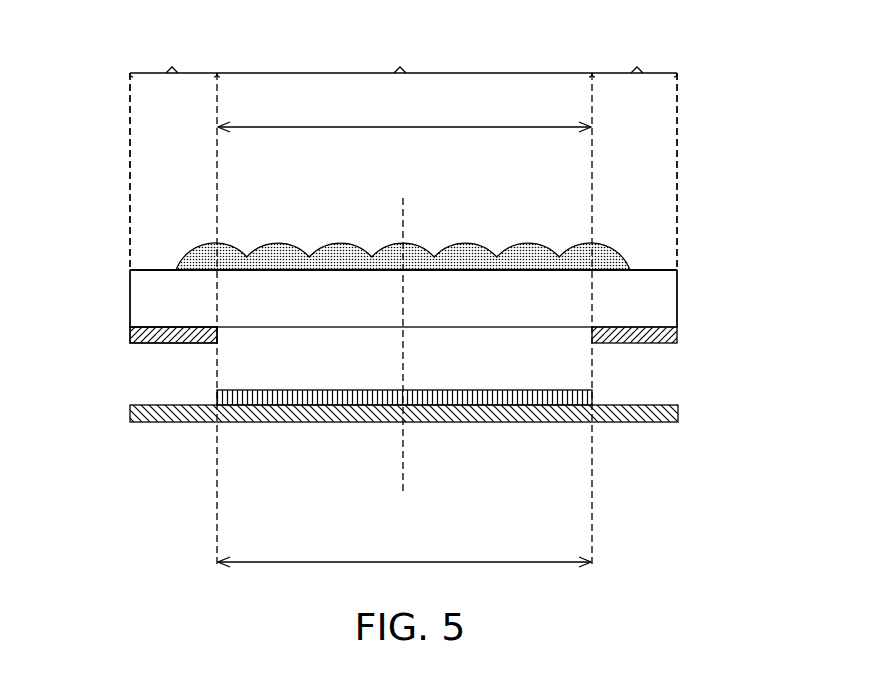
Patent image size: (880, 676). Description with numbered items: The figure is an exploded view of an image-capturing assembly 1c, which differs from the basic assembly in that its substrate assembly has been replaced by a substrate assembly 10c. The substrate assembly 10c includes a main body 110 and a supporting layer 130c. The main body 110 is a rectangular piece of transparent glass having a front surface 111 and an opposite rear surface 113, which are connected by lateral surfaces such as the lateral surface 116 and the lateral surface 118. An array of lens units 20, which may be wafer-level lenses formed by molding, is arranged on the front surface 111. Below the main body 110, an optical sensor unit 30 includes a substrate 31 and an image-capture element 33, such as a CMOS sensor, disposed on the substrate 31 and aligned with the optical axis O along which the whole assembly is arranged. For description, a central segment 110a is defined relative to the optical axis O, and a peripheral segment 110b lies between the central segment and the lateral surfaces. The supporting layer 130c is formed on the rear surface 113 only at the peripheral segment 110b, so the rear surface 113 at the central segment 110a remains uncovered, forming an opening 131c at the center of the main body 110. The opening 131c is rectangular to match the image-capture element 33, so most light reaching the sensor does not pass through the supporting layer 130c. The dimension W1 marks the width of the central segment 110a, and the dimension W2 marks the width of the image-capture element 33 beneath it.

The peripheral segment 110b is at (403, 54).
The central segment 110a is at (414, 52).
The width of central region W1 is at (404, 114).
The width of second layer W2 is at (404, 550).
The optical axis O is at (401, 180).
The main body 110 is at (668, 307).
The lateral surface 118 is at (680, 277).
The lateral surface 116 is at (130, 297).
The front surface 111 is at (153, 268).
The supporting layer 130c is at (130, 338).
The rear surface 113 is at (185, 337).
The lens units 20 is at (578, 247).
The opening 131c is at (469, 350).
The image-capturing assembly 1c is at (683, 197).
The substrate assembly 10c is at (688, 258).
The optical sensor unit 30 is at (448, 442).
The substrate 31 is at (338, 423).
The image-capture element 33 is at (275, 405).